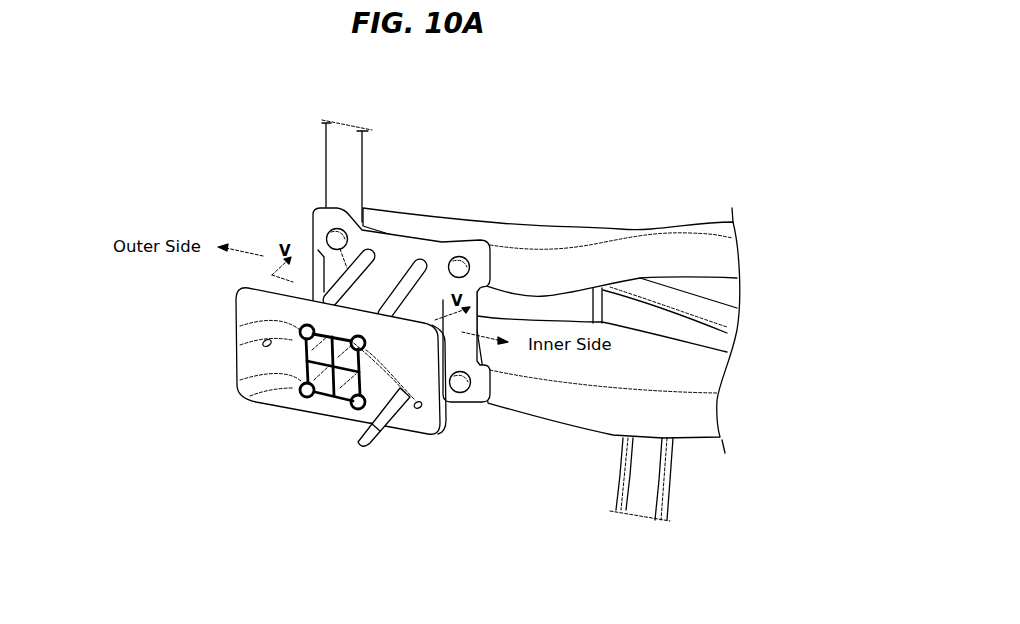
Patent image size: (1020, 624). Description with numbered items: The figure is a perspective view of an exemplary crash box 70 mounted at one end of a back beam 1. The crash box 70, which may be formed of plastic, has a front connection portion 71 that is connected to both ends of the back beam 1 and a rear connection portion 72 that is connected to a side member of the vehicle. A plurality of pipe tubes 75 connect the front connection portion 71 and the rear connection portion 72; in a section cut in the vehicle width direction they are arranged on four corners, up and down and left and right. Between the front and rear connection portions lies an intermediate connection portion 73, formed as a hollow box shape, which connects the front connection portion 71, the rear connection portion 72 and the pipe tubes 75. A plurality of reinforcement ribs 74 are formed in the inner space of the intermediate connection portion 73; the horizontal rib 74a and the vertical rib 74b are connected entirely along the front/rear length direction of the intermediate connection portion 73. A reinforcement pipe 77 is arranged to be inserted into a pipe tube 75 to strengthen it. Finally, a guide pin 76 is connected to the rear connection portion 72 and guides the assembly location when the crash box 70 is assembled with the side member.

The back beam 1 is at (630, 250).
The crash box 70 is at (233, 405).
The front connection portion 71 is at (422, 250).
The rear connection portion 72 is at (268, 407).
The intermediate connection portion 73 is at (388, 268).
The reinforcement ribs 74 is at (318, 539).
The horizontal rib 74a is at (303, 402).
The vertical rib 74b is at (331, 400).
The pipe tubes 75 is at (313, 220).
The guide pin 76 is at (375, 443).
The reinforcement pipe 77 is at (285, 360).